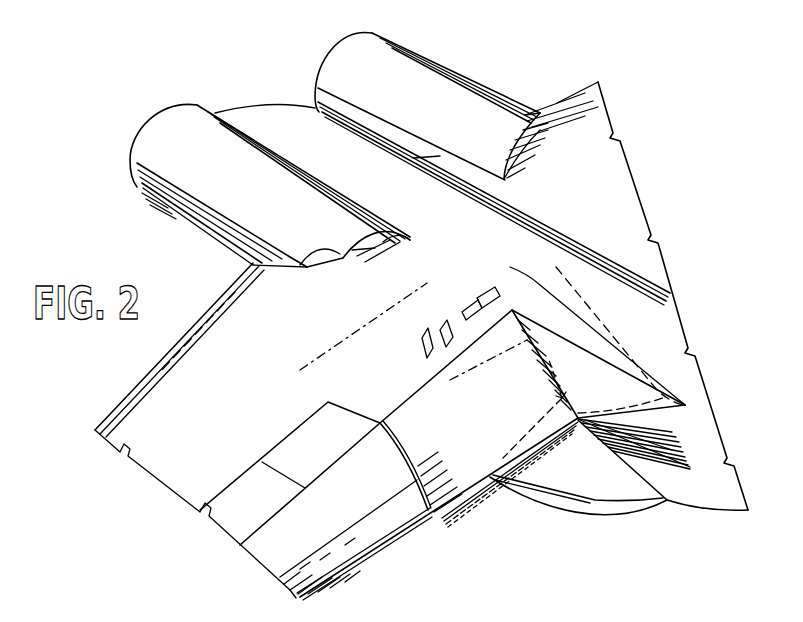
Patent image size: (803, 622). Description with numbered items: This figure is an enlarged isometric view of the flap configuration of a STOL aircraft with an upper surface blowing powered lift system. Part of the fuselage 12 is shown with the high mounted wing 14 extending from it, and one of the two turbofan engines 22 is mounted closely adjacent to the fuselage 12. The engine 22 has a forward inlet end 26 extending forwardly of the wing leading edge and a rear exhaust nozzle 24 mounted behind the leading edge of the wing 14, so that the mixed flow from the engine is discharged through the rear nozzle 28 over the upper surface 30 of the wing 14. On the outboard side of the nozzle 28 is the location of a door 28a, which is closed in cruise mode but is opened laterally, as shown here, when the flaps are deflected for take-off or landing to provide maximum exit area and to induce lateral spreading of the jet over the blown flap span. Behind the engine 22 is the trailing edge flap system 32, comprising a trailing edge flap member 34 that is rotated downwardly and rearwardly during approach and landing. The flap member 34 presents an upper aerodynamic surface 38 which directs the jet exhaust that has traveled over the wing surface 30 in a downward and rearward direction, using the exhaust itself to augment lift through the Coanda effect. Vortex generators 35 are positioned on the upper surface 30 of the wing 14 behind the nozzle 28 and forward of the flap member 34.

The fuselage 12 is at (272, 122).
The wing 14 is at (182, 372).
The engine 22 is at (190, 188).
The rear exhaust nozzle 24 is at (307, 268).
The forward inlet end 26 is at (163, 118).
The rear nozzle 28 is at (368, 258).
The door 28a is at (322, 277).
The upper surface 30 is at (381, 359).
The trailing edge flap system 32 is at (482, 497).
The trailing edge flap member 34 is at (497, 485).
The vortex generators 35 is at (443, 320).
The upper aerodynamic surface 38 is at (491, 416).